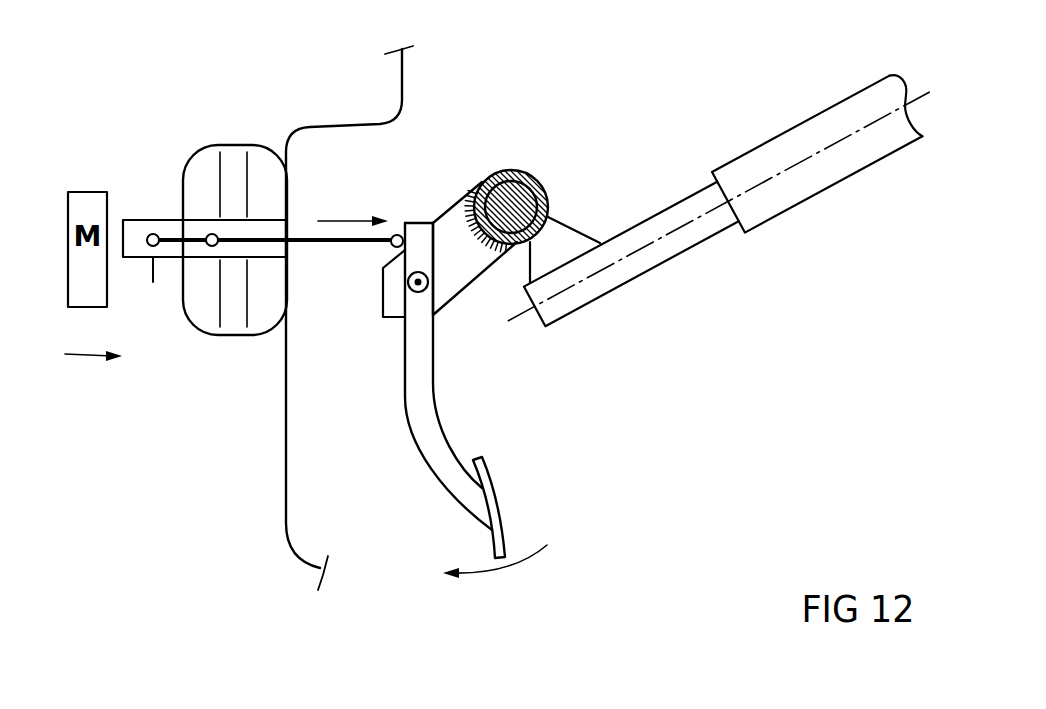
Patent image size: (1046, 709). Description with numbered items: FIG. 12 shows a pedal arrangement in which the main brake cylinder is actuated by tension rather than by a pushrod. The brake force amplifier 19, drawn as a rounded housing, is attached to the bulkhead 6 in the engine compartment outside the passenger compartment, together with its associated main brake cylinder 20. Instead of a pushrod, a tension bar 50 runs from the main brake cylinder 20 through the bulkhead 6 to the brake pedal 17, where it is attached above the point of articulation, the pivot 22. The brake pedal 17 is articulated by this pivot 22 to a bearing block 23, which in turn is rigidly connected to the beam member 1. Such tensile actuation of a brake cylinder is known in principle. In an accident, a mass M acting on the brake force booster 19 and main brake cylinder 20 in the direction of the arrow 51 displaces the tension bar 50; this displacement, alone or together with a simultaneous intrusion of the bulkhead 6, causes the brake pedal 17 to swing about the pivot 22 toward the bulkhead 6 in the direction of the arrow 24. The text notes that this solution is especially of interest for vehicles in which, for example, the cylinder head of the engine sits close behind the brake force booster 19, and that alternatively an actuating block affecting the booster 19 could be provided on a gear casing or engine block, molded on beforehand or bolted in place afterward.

The beam member 1 is at (535, 190).
The bulkhead 6 is at (323, 127).
The brake pedal 17 is at (421, 352).
The brake force amplifier 19 is at (203, 180).
The main brake cylinder 20 is at (137, 235).
The pivot 22 is at (418, 282).
The bearing block 23 is at (453, 245).
The arrow 24 is at (512, 563).
The tension bar 50 is at (317, 240).
The arrow 51 is at (83, 354).